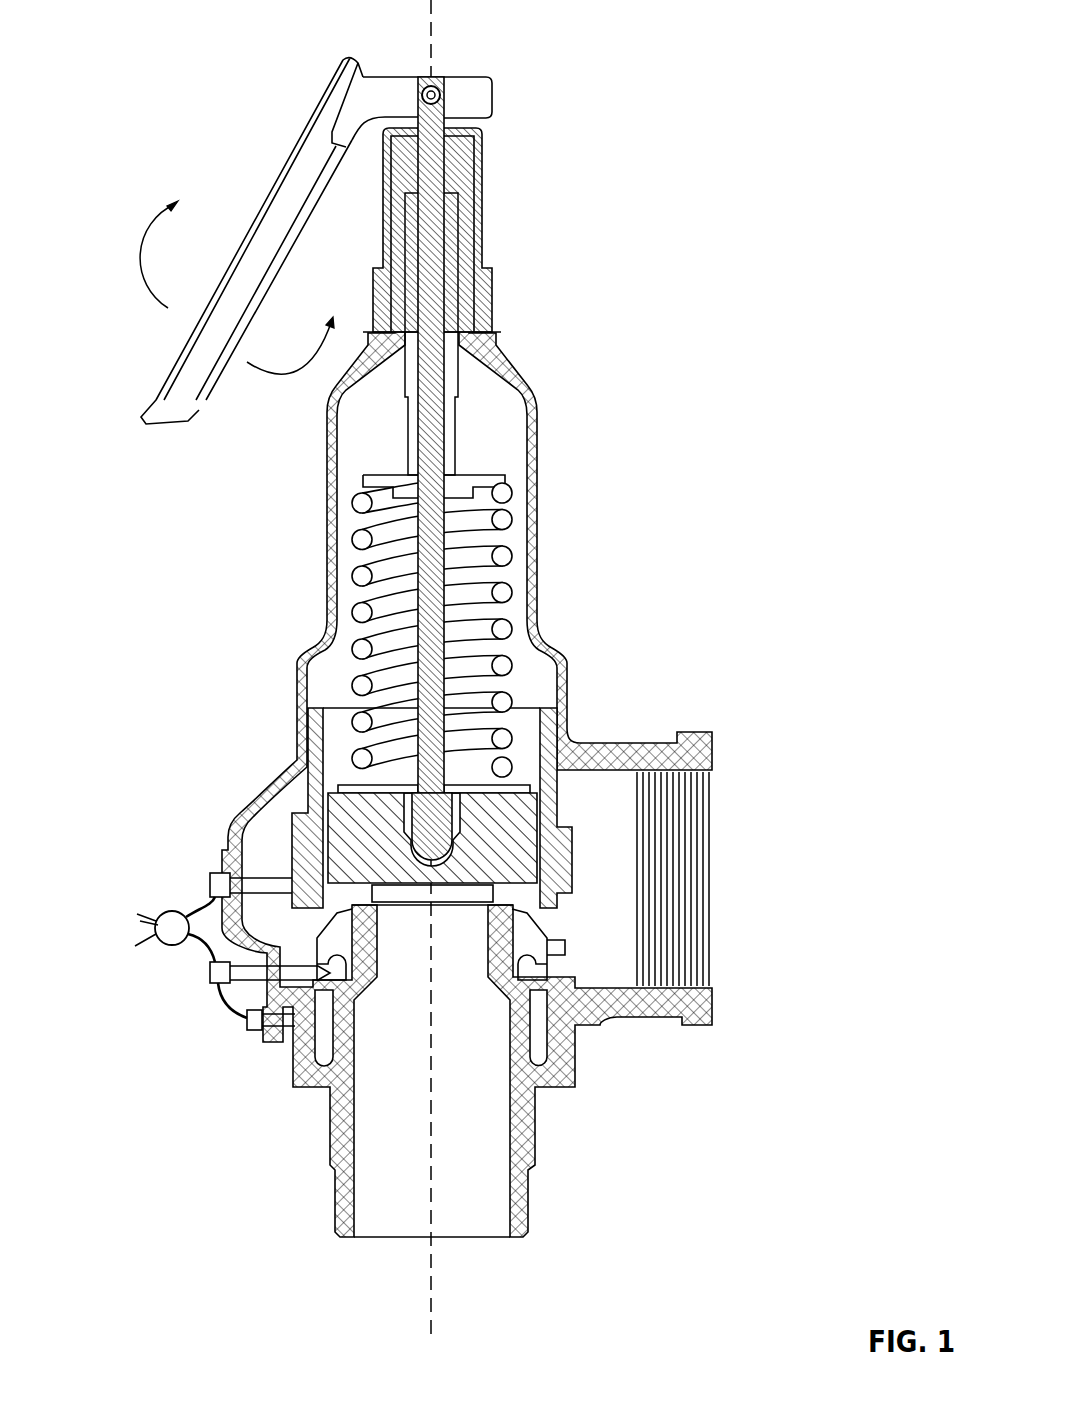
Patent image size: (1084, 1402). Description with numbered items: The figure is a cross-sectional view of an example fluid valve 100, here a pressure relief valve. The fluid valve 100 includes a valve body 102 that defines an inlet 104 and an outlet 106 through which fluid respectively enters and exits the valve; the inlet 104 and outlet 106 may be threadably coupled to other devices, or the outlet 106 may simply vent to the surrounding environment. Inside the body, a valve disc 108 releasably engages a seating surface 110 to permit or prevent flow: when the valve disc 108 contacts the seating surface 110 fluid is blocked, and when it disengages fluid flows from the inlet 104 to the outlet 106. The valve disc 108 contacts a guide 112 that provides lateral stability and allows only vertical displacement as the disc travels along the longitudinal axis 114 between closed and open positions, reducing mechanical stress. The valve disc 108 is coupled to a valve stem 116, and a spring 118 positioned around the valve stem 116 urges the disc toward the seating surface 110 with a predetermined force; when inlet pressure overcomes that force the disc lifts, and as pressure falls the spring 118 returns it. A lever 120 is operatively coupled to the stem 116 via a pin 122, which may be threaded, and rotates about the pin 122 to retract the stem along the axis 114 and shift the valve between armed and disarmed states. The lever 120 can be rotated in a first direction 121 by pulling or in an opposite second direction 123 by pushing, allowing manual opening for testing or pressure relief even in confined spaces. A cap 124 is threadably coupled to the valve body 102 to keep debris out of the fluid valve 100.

The fluid valve 100 is at (776, 97).
The valve body 102 is at (690, 748).
The inlet 104 is at (470, 1240).
The outlet 106 is at (712, 870).
The valve disc 108 is at (364, 836).
The seating surface 110 is at (503, 900).
The guide 112 is at (557, 730).
The longitudinal axis 114 is at (432, 1300).
The valve stem 116 is at (435, 463).
The spring 118 is at (507, 553).
The lever 120 is at (312, 122).
The first direction 121 is at (142, 253).
The pin 122 is at (438, 78).
The second direction 123 is at (292, 372).
The cap 124 is at (482, 205).